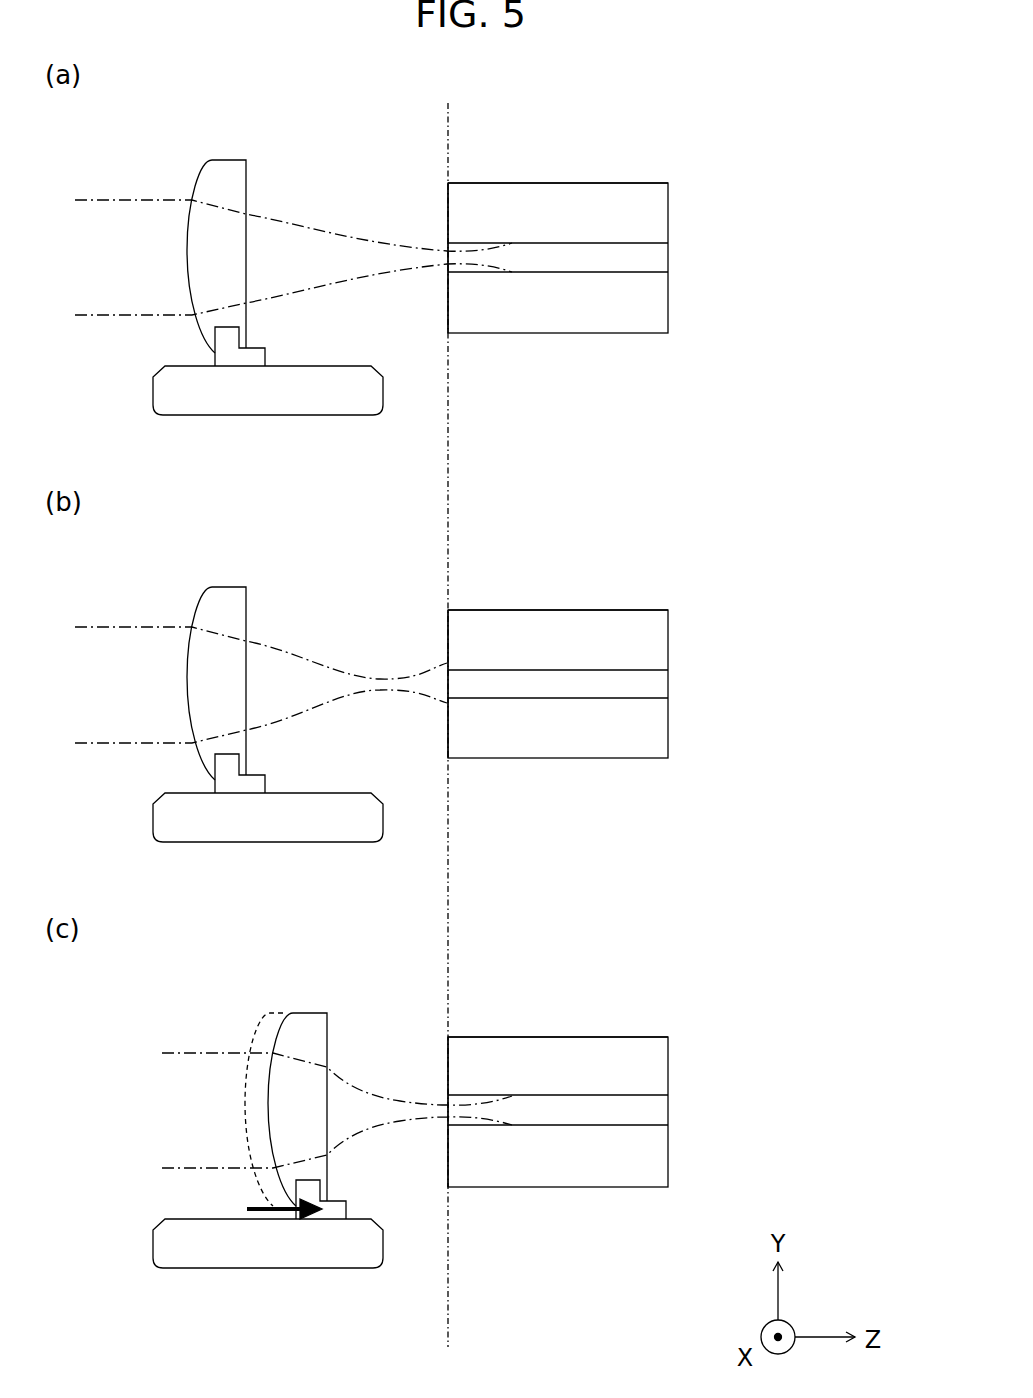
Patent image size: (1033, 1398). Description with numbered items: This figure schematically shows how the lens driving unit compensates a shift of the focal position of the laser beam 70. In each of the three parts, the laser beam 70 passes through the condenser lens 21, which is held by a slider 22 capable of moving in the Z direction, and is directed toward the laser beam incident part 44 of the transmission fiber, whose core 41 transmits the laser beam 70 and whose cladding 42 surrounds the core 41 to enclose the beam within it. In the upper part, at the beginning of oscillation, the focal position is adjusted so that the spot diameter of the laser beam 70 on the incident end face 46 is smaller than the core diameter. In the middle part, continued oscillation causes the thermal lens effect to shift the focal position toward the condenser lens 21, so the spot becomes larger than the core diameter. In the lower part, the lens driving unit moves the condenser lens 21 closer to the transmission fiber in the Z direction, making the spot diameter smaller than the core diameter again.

The condenser lens 21 is at (226, 160).
The slider 22 is at (153, 398).
The core 41 is at (657, 259).
The cladding 42 is at (641, 183).
The laser beam incident part 44 is at (532, 176).
The incident end face 46 is at (445, 301).
The laser beam 70 is at (147, 199).